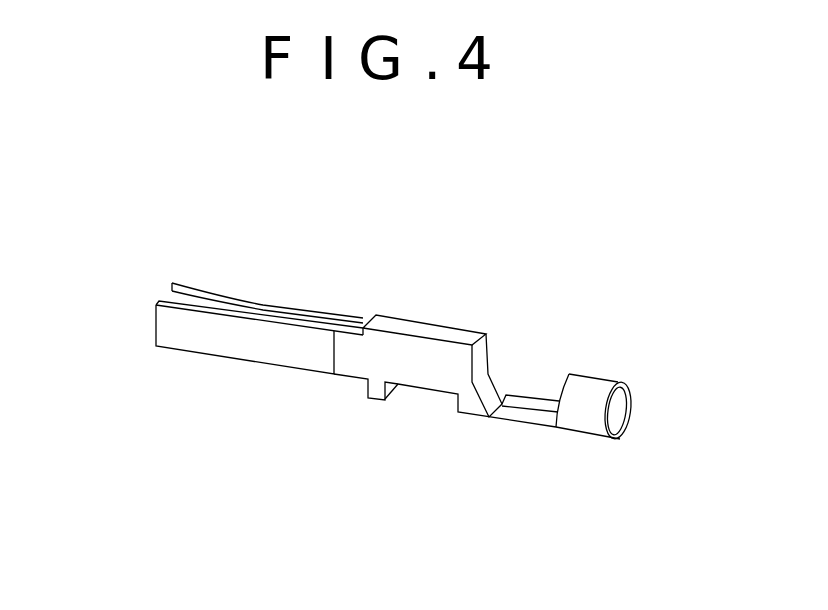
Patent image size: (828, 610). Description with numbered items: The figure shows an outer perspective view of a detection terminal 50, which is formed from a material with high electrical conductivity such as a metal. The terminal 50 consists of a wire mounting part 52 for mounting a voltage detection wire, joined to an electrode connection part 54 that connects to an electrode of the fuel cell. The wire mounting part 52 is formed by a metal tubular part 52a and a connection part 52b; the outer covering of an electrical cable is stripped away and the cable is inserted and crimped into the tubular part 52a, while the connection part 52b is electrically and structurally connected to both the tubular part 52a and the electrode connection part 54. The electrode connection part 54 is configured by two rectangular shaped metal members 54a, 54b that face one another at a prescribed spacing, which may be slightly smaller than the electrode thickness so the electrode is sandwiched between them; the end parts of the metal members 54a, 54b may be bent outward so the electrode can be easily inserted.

The detection terminal 50 is at (394, 531).
The wire mounting part 52 is at (492, 371).
The tubular part 52a is at (603, 377).
The connection part 52b is at (401, 315).
The electrode connection part 54 is at (237, 334).
The metal member 54a is at (155, 294).
The metal member 54b is at (182, 278).